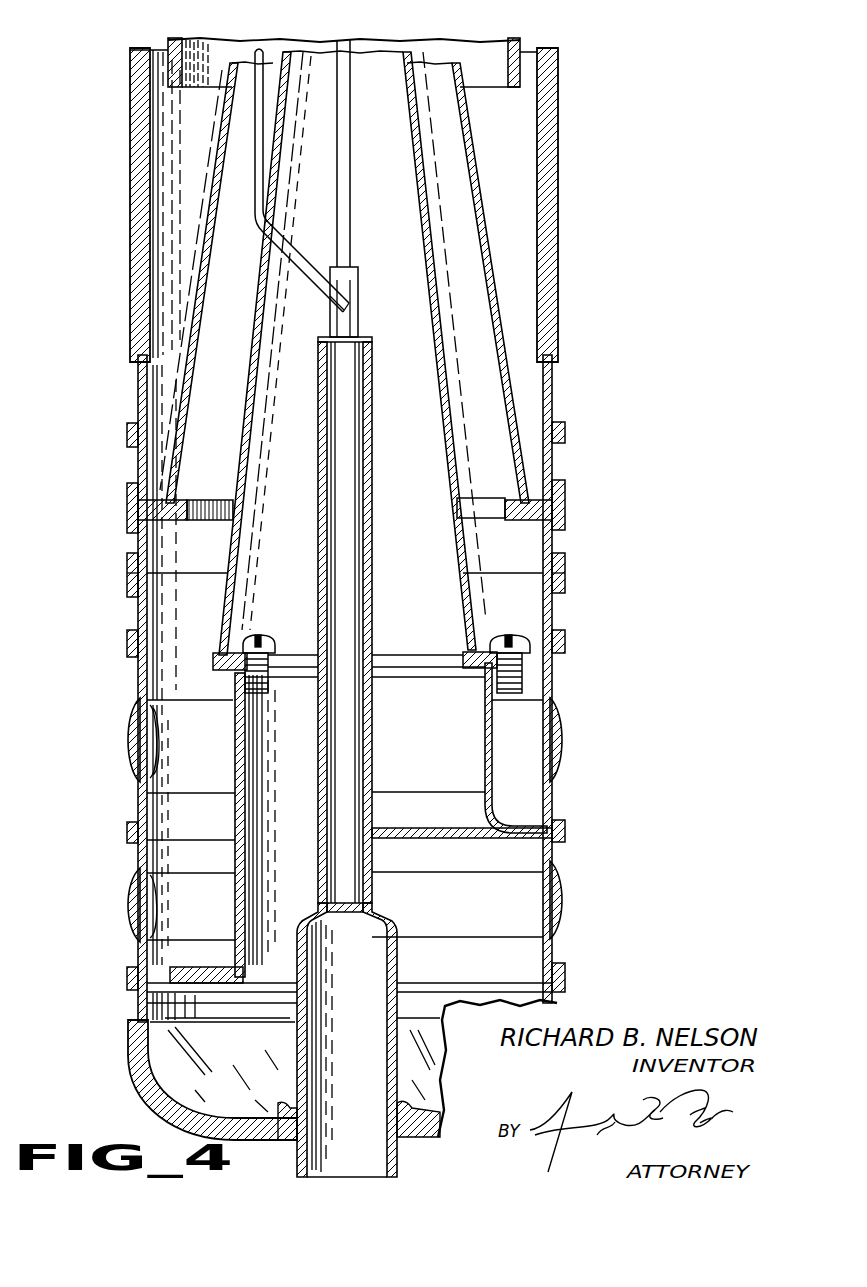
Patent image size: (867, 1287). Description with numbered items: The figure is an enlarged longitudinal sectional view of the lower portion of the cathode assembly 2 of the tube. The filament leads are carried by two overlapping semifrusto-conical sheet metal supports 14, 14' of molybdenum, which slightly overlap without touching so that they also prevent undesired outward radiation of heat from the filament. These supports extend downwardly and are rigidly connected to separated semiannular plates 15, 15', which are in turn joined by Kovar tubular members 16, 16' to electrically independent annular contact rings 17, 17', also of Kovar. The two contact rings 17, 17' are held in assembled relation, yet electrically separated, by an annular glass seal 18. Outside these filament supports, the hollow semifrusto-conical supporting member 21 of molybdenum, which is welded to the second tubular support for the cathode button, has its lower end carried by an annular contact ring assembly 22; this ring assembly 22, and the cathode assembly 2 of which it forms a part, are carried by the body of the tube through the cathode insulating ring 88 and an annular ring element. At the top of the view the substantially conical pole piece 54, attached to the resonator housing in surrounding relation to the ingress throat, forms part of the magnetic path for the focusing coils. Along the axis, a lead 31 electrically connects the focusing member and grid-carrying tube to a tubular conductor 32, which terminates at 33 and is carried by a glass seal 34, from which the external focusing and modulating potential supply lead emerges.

The cathode assembly 2 is at (562, 292).
The semifrusto-conical sheet metal support 14 is at (265, 353).
The semifrusto-conical sheet metal support 14' is at (439, 351).
The semiannular plate 15 is at (227, 666).
The semiannular plate 15' is at (496, 647).
The tubular member 16 is at (233, 825).
The tubular member 16' is at (490, 748).
The annular contact ring 17 is at (385, 979).
The annular contact ring 17' is at (498, 828).
The annular glass seal 18 is at (563, 903).
The hollow semifrusto-conical supporting member 21 is at (212, 207).
The annular contact ring assembly 22 is at (557, 463).
The lead 31 is at (300, 260).
The tubular conductor 32 is at (323, 492).
The termination of tubular conductor 33 is at (297, 1055).
The glass seal 34 is at (140, 1068).
The conical pole piece 54 is at (515, 70).
The cathode insulating ring 88 is at (148, 157).